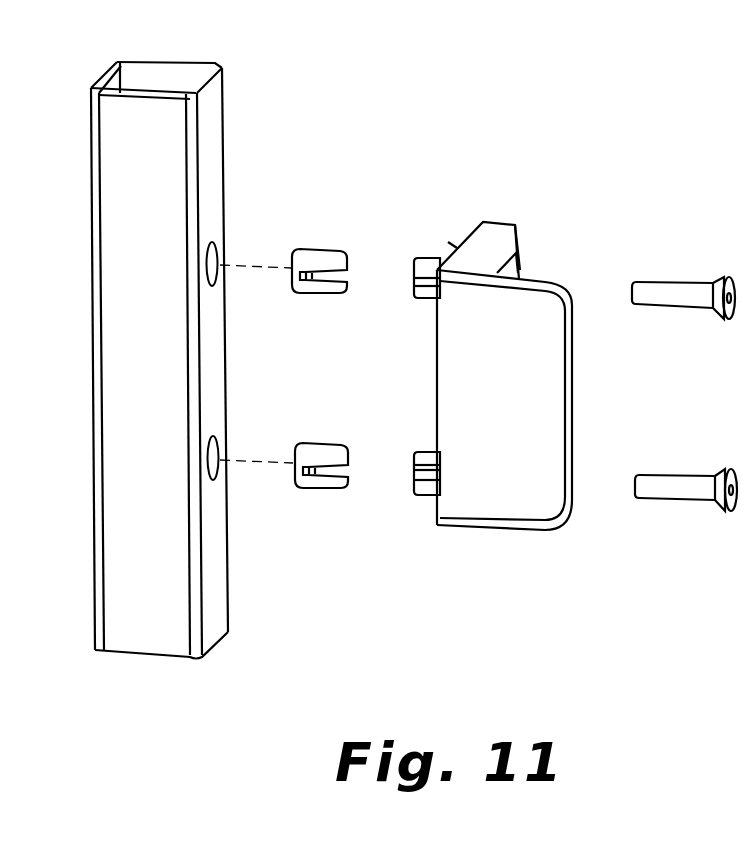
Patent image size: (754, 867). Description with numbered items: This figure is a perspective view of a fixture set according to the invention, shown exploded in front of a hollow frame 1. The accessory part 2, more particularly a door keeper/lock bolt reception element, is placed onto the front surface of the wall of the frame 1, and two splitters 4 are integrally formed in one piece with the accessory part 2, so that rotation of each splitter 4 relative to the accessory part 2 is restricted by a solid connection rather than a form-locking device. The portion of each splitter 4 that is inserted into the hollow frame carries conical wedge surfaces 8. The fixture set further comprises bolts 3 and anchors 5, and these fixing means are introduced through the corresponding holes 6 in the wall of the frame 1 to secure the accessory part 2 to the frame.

The frame 1 is at (127, 286).
The accessory part 2 is at (497, 245).
The bolt 3 is at (668, 294).
The splitter 4 is at (426, 268).
The anchor 5 is at (304, 250).
The hole 6 is at (220, 244).
The conical wedge surface 8 is at (420, 462).